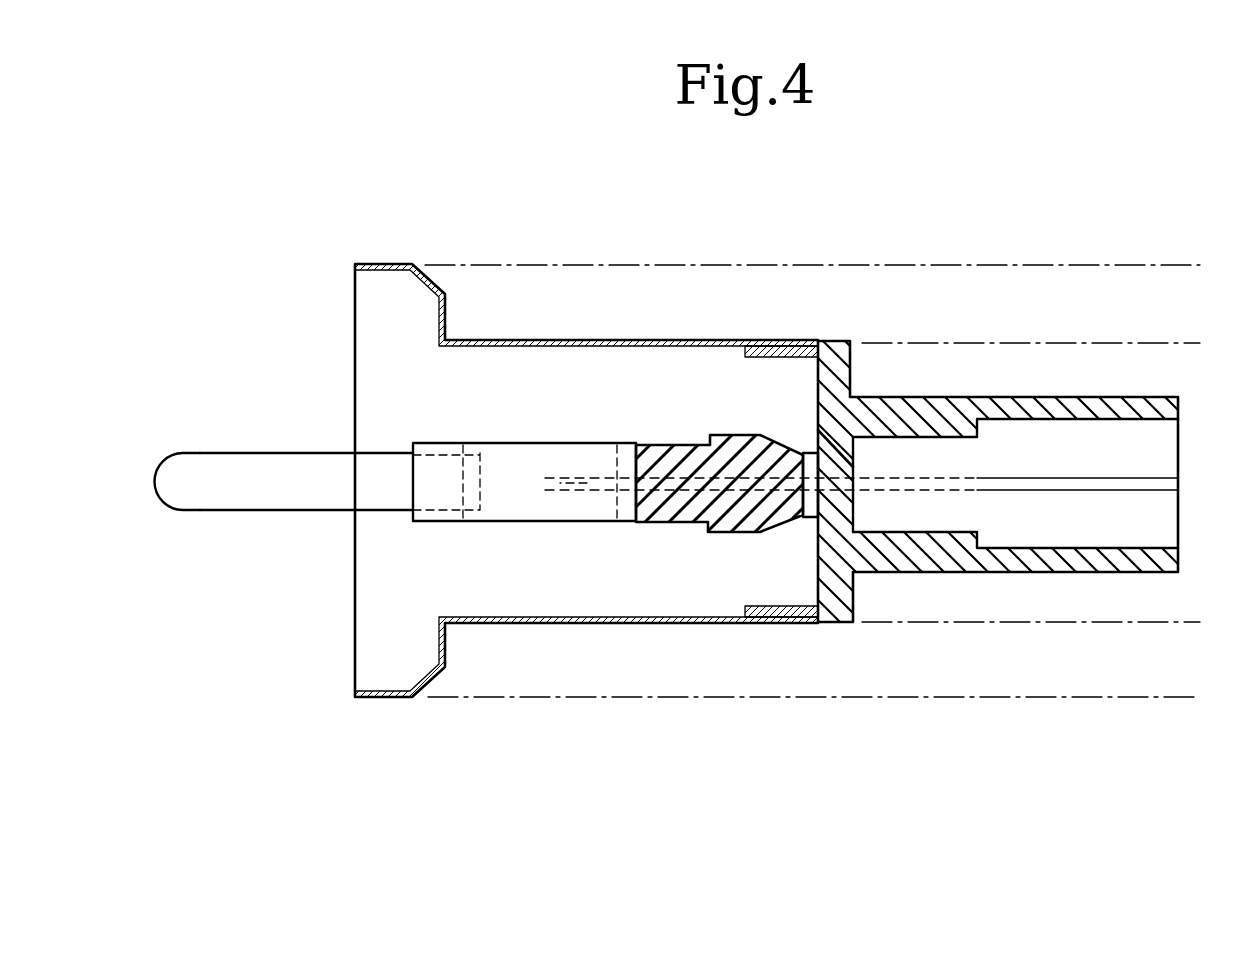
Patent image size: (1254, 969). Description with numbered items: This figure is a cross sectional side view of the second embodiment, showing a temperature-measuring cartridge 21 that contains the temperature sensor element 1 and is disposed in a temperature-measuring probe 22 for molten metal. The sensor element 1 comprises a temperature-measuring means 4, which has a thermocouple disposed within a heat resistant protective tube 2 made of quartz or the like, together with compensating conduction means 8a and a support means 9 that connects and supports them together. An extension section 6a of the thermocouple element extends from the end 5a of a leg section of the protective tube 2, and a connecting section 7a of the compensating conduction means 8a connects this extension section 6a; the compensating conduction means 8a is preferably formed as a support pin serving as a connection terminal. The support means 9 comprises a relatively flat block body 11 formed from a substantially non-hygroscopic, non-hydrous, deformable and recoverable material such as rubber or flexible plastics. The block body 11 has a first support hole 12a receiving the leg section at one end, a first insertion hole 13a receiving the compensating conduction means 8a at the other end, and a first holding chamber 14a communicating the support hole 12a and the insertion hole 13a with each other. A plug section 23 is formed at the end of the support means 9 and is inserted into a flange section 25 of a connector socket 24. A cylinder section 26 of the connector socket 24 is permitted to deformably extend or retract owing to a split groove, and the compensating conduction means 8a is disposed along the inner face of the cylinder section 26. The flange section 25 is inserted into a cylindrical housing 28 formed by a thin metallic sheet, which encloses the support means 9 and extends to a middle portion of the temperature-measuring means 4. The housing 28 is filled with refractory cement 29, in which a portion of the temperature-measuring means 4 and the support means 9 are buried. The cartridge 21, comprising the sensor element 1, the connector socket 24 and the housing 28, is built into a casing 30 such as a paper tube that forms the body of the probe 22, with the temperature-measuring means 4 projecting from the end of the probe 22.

The temperature sensor element 1 is at (228, 533).
The protective tube 2 is at (218, 455).
The temperature-measuring means 4 is at (298, 447).
The end of leg section 5a is at (478, 443).
The extension section 6a is at (512, 522).
The connecting section 7a is at (587, 483).
The first compensating conduction means 8a is at (1150, 483).
The support means 9 is at (719, 560).
The block body 11 is at (672, 528).
The first support hole 12a is at (437, 510).
The first insertion hole 13a is at (645, 522).
The first holding chamber 14a is at (548, 355).
The temperature-measuring cartridge 21 is at (905, 315).
The temperature-measuring probe 22 is at (1122, 255).
The plug section 23 is at (776, 510).
The connector socket 24 is at (977, 392).
The flange section 25 is at (780, 348).
The cylinder section 26 is at (1050, 572).
The cylindrical housing 28 is at (717, 335).
The refractory cement 29 is at (368, 328).
The casing 30 is at (1082, 700).